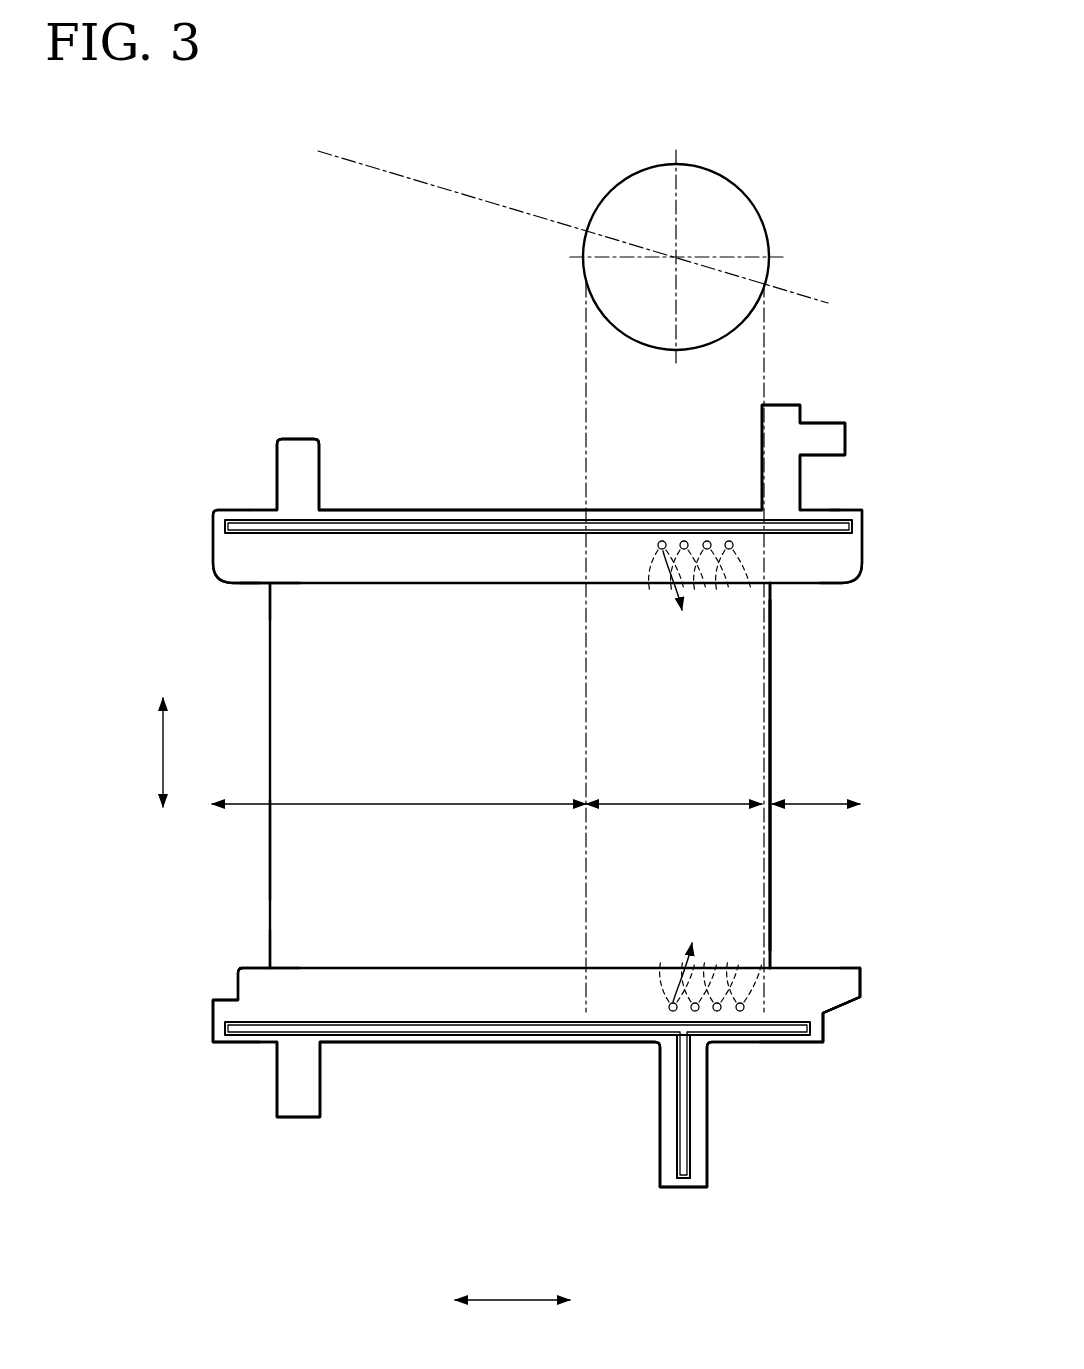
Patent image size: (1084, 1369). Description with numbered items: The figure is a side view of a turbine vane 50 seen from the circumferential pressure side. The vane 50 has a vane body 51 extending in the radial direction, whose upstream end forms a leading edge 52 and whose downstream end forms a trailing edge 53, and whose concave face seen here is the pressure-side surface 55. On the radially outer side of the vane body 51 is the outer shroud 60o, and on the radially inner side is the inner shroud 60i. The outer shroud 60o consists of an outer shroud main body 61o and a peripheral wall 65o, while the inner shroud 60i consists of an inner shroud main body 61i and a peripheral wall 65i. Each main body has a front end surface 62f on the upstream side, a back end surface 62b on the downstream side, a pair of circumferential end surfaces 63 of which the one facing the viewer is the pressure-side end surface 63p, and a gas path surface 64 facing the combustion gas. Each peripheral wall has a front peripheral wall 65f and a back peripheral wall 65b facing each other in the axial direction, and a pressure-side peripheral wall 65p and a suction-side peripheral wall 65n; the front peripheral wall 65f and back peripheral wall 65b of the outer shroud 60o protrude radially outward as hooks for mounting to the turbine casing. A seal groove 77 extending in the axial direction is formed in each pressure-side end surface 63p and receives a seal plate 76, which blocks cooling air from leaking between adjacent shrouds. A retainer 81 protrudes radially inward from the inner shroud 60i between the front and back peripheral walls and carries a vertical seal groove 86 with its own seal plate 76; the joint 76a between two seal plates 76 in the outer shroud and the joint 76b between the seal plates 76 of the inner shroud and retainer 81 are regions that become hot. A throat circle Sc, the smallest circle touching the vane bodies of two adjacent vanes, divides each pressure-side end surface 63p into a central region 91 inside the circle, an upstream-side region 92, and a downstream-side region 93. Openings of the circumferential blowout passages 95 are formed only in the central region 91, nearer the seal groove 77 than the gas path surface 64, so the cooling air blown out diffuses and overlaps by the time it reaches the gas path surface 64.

The vane 50 is at (530, 734).
The vane body 51 is at (773, 685).
The leading edge 52 is at (268, 660).
The trailing edge 53 is at (770, 660).
The pressure-side surface 55 is at (302, 860).
The outer shroud 60o is at (480, 485).
The inner shroud 60i is at (490, 1077).
The outer shroud main body 61o is at (213, 512).
The inner shroud main body 61i is at (212, 1045).
The front end surface 62f is at (213, 535).
The back end surface 62b is at (863, 532).
The circumferential end surface 63 is at (347, 160).
The pressure-side end surface 63p is at (480, 669).
The gas path surface 64 is at (305, 585).
The front peripheral wall 65f is at (297, 452).
The back peripheral wall 65b is at (780, 430).
The suction-side peripheral wall 65n is at (540, 744).
The pressure-side peripheral wall 65p is at (485, 1120).
The peripheral wall 65o is at (570, 761).
The peripheral wall 65i is at (536, 1077).
The seal plate 76 is at (538, 815).
The joint 76a is at (696, 522).
The joint 76b is at (677, 1030).
The seal groove 77 is at (538, 815).
The retainer 81 is at (667, 1178).
The vertical seal groove 86 is at (690, 1177).
The central region 91 is at (681, 802).
The upstream-side region 92 is at (425, 802).
The downstream-side region 93 is at (816, 802).
The circumferential blowout passage 95 is at (707, 552).
The throat circle Sc is at (742, 185).